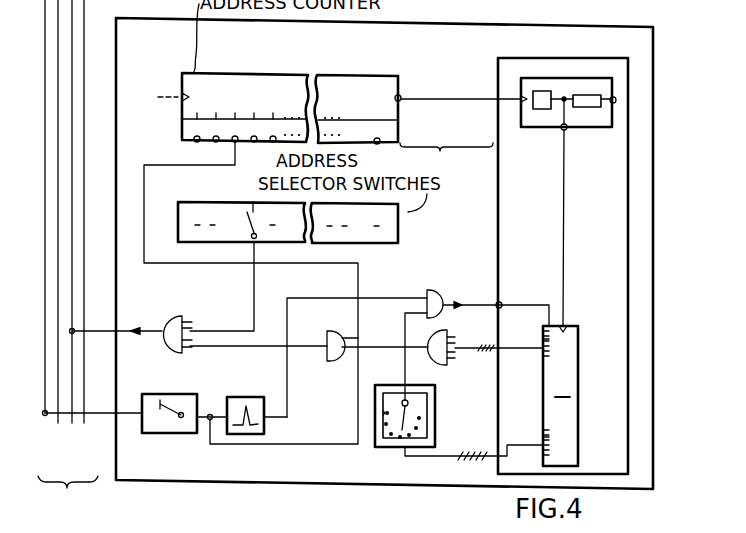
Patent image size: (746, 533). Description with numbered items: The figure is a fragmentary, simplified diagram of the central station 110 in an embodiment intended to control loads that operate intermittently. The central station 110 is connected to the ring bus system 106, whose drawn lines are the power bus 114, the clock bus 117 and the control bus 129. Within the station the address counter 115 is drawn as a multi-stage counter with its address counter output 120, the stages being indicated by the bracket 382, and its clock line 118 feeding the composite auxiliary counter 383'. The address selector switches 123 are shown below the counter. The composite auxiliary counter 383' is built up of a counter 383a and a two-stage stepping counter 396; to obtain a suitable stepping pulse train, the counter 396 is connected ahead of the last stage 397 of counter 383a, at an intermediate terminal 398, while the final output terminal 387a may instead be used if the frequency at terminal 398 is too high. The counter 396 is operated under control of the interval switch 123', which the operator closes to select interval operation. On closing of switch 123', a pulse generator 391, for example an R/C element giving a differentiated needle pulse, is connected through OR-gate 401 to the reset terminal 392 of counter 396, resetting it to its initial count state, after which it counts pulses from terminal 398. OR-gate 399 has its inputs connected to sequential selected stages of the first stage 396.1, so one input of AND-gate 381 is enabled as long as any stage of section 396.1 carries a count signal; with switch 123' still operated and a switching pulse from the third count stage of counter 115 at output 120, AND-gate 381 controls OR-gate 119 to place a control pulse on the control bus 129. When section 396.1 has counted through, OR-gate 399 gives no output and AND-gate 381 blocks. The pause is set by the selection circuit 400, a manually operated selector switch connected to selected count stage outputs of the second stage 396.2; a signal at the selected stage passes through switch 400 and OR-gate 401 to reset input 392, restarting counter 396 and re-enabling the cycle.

The ring bus system 106 is at (68, 491).
The central station 110 is at (160, 45).
The power bus 114 is at (44, 418).
The address counter 115 is at (248, 82).
The clock bus 117 is at (58, 425).
The counter output line 118 is at (401, 99).
The OR-gate 119 is at (174, 319).
The address counter output 120 is at (186, 130).
The address selector switches 123 is at (284, 211).
The interval switch 123' is at (184, 426).
The control bus 129 is at (72, 425).
The AND-gate 381 is at (333, 361).
The counter stages 382 is at (446, 157).
The composite auxiliary counter 383' is at (563, 254).
The counter 383a is at (527, 128).
The final output terminal 387a is at (615, 98).
The pulse generator 391 is at (264, 428).
The reset terminal 392 is at (496, 303).
The two-stage stepping counter 396 is at (578, 397).
The first stage of stepping counter 396.1 is at (578, 339).
The second stage of stepping counter 396.2 is at (578, 437).
The last stage of counter 383a 397 is at (598, 108).
The intermediate terminal 398 is at (561, 129).
The OR-gate 399 is at (455, 347).
The selection circuit 400 is at (375, 430).
The OR-gate 401 is at (437, 290).